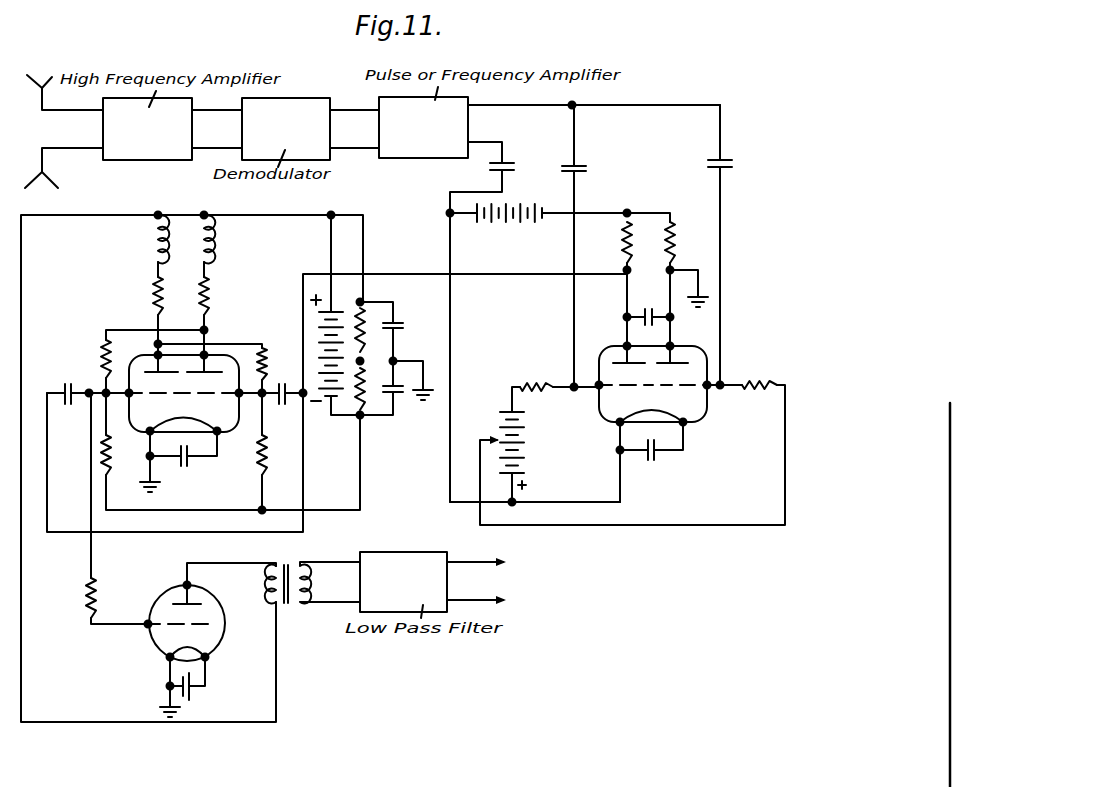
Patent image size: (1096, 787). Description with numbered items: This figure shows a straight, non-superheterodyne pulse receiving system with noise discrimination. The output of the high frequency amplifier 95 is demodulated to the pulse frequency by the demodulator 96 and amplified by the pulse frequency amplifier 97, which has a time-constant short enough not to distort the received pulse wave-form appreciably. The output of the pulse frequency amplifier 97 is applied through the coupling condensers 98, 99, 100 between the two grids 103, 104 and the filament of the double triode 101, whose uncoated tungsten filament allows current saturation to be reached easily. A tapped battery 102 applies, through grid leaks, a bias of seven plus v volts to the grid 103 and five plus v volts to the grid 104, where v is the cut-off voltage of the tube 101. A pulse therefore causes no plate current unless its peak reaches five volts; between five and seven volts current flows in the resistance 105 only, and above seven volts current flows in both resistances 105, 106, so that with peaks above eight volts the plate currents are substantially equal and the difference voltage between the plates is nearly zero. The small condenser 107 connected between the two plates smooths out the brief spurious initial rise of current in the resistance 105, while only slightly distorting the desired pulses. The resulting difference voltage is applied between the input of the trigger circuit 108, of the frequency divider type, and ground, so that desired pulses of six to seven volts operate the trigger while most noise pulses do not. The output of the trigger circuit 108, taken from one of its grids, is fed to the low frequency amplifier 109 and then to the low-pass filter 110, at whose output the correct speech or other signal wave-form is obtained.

The high frequency amplifier 95 is at (147, 129).
The demodulator 96 is at (286, 129).
The pulse frequency amplifier 97 is at (423, 127).
The coupling condenser 98 is at (582, 164).
The coupling condenser 99 is at (732, 161).
The coupling condenser 100 is at (508, 162).
The double triode 101 is at (702, 421).
The battery 102 is at (524, 449).
The grid 103 is at (622, 387).
The grid 104 is at (688, 388).
The resistance 105 is at (621, 243).
The resistance 106 is at (672, 244).
The small condenser 107 is at (645, 310).
The trigger circuit 108 is at (219, 434).
The low frequency amplifier 109 is at (157, 600).
The low-pass filter 110 is at (433, 582).